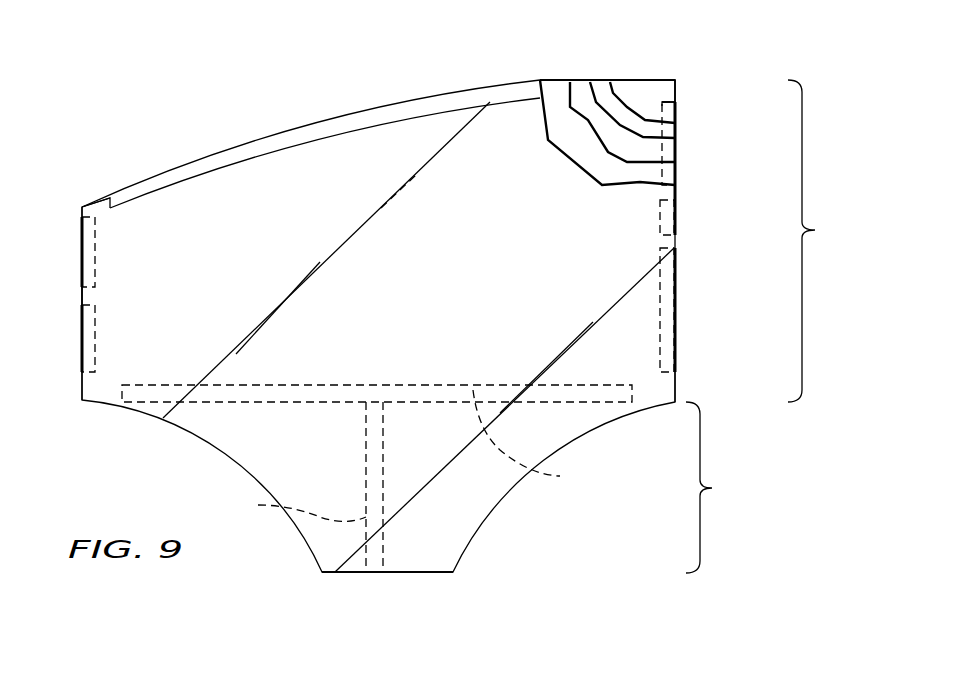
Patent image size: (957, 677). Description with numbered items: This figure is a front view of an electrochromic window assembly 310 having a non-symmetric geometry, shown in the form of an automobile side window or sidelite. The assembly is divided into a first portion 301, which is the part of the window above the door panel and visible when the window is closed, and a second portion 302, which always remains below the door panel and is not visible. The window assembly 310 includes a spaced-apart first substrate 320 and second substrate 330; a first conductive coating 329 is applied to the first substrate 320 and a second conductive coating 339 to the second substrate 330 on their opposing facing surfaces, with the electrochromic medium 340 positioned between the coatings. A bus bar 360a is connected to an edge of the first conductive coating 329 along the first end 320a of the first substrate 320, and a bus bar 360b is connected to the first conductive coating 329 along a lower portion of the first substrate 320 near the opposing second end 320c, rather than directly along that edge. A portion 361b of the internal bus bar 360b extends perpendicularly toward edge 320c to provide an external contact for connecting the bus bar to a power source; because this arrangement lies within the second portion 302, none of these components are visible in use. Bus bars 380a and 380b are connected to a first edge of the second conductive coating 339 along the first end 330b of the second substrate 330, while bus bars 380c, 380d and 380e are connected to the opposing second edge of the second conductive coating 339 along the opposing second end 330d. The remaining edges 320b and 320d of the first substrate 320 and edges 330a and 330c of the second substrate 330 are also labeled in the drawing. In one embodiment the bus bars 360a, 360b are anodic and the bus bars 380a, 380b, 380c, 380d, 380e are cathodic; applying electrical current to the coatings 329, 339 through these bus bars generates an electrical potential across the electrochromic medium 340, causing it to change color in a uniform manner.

The electrochromic window assembly 310 is at (163, 100).
The first substrate 320 is at (332, 175).
The first end of first substrate 320a is at (100, 199).
The second edge of first plate 320b is at (50, 303).
The second end of first substrate 320c is at (438, 572).
The fourth edge of first plate 320d is at (672, 385).
The second substrate 330 is at (675, 80).
The first edge of second plate 330a is at (640, 78).
The first end of second substrate 330b is at (82, 297).
The third edge of second plate 330c is at (466, 573).
The second end of second substrate 330d is at (677, 92).
The first conductive coating 329 is at (564, 108).
The second conductive coating 339 is at (613, 92).
The electrochromic medium 340 is at (589, 94).
The bus bar 360a is at (417, 110).
The bus bar 360b is at (504, 410).
The portion of internal bus bar 361b is at (286, 507).
The bus bar 380a is at (82, 232).
The bus bar 380b is at (85, 352).
The bus bar 380c is at (670, 110).
The bus bar 380d is at (668, 215).
The bus bar 380e is at (672, 302).
The first portion 301 is at (823, 241).
The second portion 302 is at (721, 487).